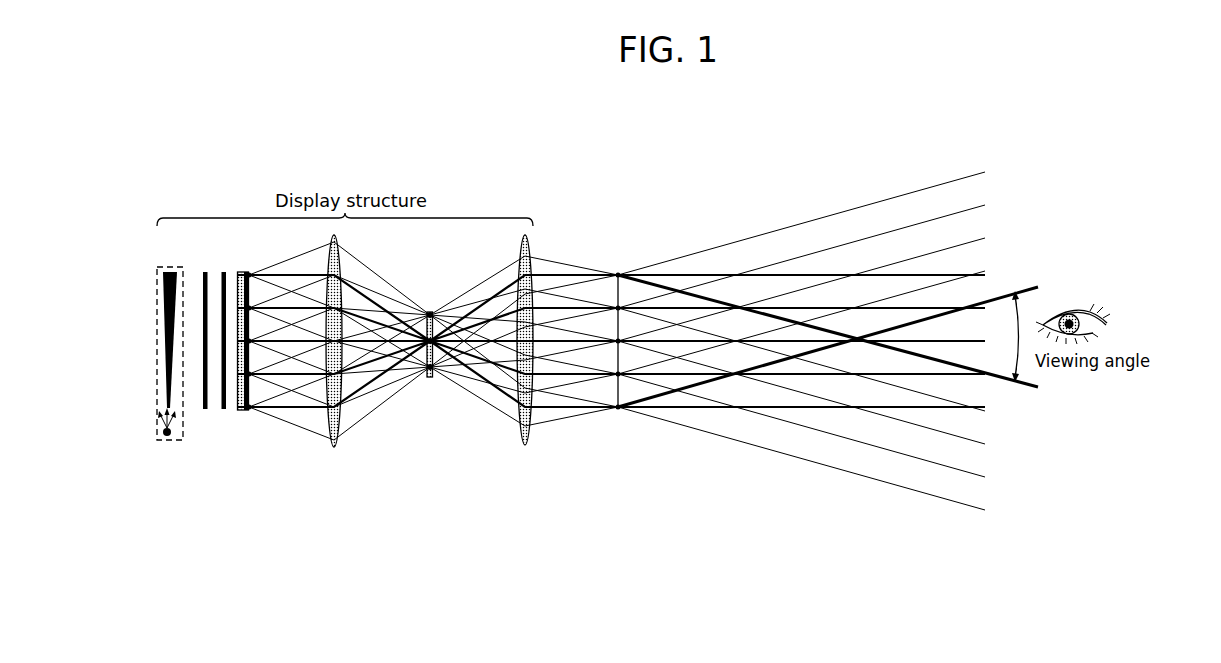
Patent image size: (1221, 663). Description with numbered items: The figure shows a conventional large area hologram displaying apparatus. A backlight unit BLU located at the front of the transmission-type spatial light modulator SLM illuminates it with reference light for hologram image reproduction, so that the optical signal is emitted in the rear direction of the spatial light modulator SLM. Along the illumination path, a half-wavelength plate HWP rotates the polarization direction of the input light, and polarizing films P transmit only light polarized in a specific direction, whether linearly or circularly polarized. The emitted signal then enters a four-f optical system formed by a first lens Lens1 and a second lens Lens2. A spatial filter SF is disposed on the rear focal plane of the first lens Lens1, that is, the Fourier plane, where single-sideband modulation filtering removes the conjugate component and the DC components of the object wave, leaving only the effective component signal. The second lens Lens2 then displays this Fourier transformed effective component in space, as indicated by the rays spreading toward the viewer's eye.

The backlight unit BLU is at (168, 369).
The half-wavelength plate HWP is at (201, 329).
The polarizing film P is at (238, 329).
The spatial light modulator SLM is at (239, 415).
The first lens Lens1 is at (337, 353).
The spatial filter SF is at (429, 356).
The second lens Lens2 is at (521, 353).